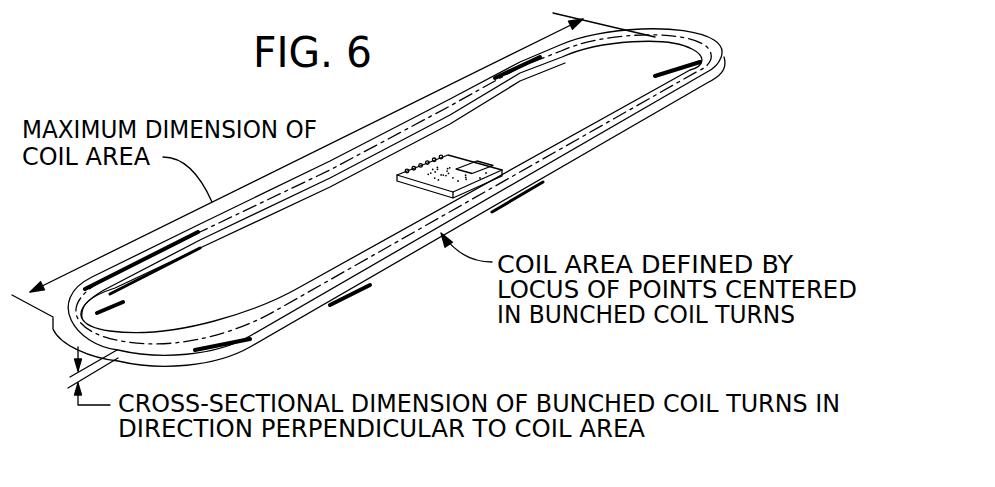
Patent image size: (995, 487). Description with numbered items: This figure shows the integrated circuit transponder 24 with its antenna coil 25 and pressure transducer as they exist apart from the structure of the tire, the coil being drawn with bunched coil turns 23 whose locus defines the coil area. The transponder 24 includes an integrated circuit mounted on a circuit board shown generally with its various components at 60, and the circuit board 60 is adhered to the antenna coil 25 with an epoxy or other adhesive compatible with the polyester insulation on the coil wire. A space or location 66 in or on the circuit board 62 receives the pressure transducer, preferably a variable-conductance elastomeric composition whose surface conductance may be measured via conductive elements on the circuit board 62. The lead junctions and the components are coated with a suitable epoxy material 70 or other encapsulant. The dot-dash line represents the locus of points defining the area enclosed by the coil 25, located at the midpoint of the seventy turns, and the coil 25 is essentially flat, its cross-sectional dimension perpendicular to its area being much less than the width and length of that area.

The antenna coil 23 is at (658, 88).
The transponder 24 is at (362, 304).
The antenna coil 25 is at (622, 118).
The circuit board 60 is at (444, 168).
The circuit board 62 is at (440, 153).
The space or location for pressure transducer 66 is at (472, 160).
The epoxy material 70 is at (500, 161).